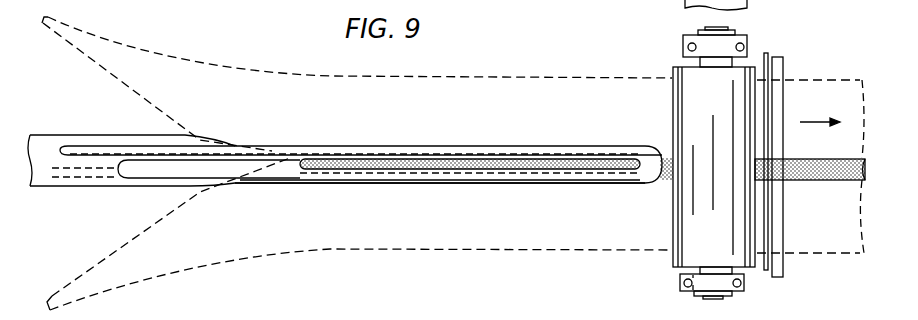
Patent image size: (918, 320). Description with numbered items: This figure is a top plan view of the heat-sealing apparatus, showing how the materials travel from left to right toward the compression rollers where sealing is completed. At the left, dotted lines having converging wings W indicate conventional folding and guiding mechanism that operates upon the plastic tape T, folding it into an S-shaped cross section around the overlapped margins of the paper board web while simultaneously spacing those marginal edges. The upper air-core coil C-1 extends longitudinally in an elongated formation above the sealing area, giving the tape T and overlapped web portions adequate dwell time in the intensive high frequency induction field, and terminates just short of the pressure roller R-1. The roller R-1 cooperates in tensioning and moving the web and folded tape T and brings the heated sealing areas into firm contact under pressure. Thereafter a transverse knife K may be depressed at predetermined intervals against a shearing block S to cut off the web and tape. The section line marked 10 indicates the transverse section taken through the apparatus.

The plastic tape T is at (49, 137).
The converging wings W is at (140, 91).
The upper air-core coil C-1 is at (432, 132).
The pressure roller R-1 is at (683, 107).
The transverse knife K is at (766, 53).
The shearing block S is at (783, 72).
The section line 10- 10 is at (478, 113).